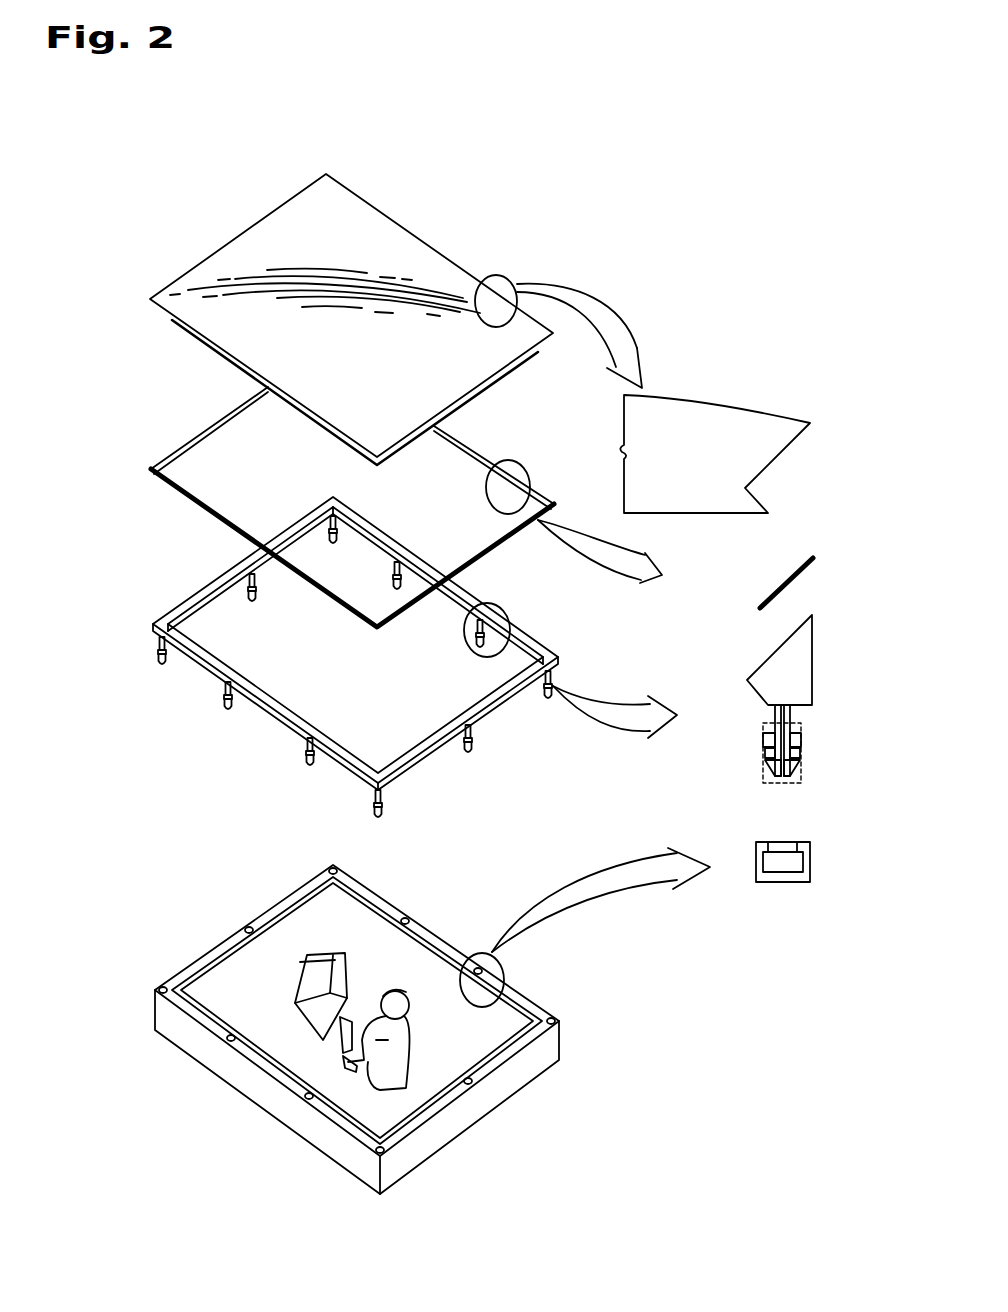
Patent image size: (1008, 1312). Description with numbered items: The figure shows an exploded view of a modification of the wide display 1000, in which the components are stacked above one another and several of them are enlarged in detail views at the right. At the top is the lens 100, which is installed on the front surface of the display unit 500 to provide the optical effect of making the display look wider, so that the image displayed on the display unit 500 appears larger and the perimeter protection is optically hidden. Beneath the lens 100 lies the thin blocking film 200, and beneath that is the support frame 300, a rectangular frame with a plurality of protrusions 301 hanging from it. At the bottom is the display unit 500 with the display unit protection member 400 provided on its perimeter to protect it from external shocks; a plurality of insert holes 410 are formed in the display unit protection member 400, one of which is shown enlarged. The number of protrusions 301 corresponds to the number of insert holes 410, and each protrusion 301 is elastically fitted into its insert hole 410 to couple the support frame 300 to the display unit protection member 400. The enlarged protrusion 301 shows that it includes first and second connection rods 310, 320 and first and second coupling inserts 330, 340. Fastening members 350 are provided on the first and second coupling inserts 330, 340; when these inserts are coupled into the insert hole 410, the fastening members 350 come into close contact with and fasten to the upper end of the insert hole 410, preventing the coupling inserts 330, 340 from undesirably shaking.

The wide display 1000 is at (150, 165).
The lens 100 is at (440, 272).
The blocking film 200 is at (162, 456).
The support frame 300 is at (168, 625).
The protrusion 301 is at (522, 671).
The first connection rod 310 is at (763, 735).
The second connection rod 320 is at (795, 735).
The first coupling insert 330 is at (768, 773).
The second coupling insert 340 is at (792, 770).
The fastening member 350 is at (800, 752).
The display unit protection member 400 is at (530, 1005).
The insert hole 410 is at (750, 885).
The display unit 500 is at (432, 1021).